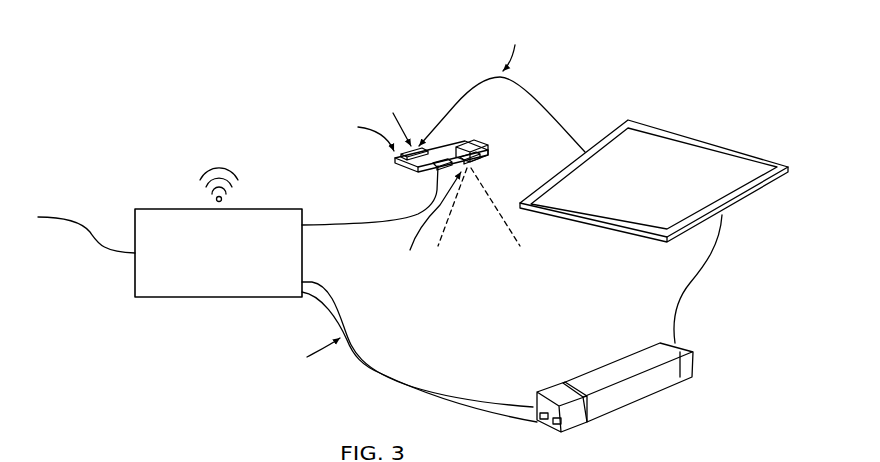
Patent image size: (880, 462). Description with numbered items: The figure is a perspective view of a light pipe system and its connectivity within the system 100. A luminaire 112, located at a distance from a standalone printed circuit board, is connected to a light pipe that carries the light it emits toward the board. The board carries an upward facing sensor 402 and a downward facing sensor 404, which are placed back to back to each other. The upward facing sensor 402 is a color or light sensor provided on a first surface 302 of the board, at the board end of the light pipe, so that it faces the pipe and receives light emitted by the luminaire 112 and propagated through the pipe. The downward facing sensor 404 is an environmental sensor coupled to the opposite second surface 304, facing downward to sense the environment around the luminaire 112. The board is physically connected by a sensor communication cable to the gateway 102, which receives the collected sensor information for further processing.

The system 100 is at (128, 30).
The gateway 102 is at (135, 222).
The luminaire 112 is at (652, 118).
The first surface 302 is at (464, 145).
The second surface 304 is at (417, 168).
The upward facing sensor 402 is at (409, 151).
The downward facing sensor 404 is at (474, 160).